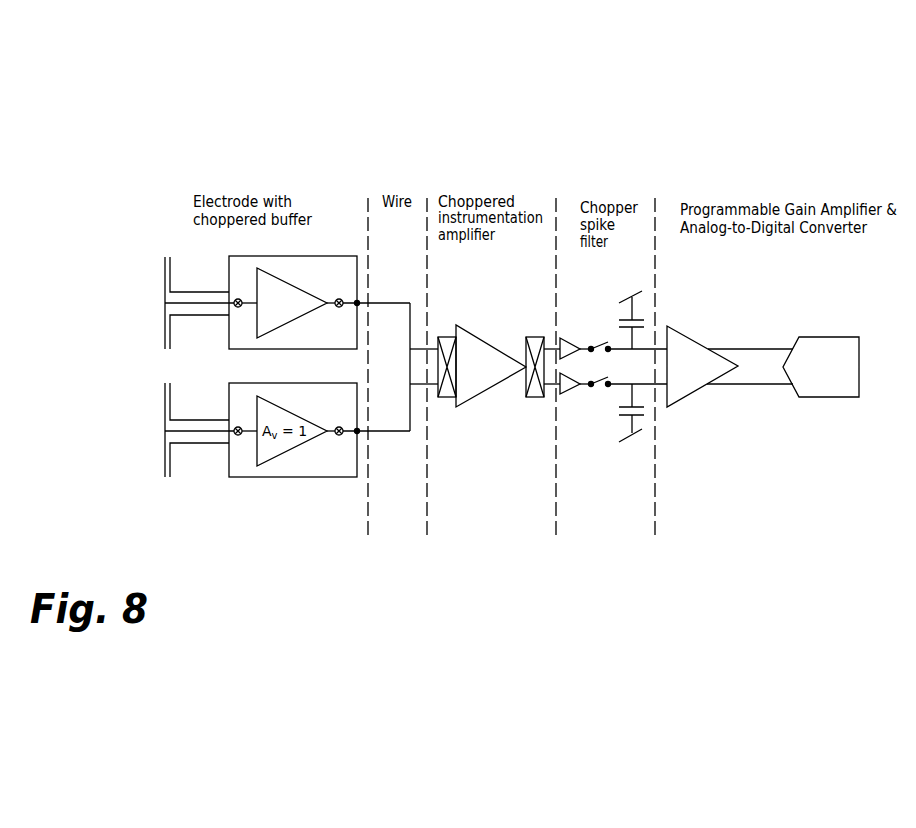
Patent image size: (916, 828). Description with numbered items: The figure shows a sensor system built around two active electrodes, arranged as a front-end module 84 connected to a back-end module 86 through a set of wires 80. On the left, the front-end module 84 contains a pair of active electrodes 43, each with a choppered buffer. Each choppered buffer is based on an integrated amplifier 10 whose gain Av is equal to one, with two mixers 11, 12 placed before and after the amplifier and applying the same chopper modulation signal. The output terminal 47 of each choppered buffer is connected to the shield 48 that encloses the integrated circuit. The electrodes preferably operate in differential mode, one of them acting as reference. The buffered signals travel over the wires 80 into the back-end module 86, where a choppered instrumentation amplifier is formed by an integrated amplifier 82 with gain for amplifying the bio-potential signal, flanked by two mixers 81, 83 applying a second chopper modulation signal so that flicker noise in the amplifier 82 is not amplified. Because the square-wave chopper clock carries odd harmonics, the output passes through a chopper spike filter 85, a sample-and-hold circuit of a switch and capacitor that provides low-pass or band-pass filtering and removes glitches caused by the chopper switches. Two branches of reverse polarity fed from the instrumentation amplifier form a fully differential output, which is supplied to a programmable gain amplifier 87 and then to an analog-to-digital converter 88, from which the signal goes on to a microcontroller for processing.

The front-end module 84 is at (198, 122).
The back-end module 86 is at (668, 128).
The active electrode 43 is at (153, 308).
The shield 48 is at (327, 256).
The output terminal 47 is at (357, 302).
The mixer 11 is at (242, 450).
The integrated amplifier 10 is at (293, 453).
The mixer 12 is at (342, 447).
The set of wires 80 is at (408, 330).
The mixer 81 is at (446, 406).
The integrated amplifier 82 is at (481, 398).
The mixer 83 is at (522, 400).
The chopper spike filter 85 is at (603, 300).
The programmable gain amplifier 87 is at (691, 407).
The analog-to-digital converter 88 is at (820, 405).